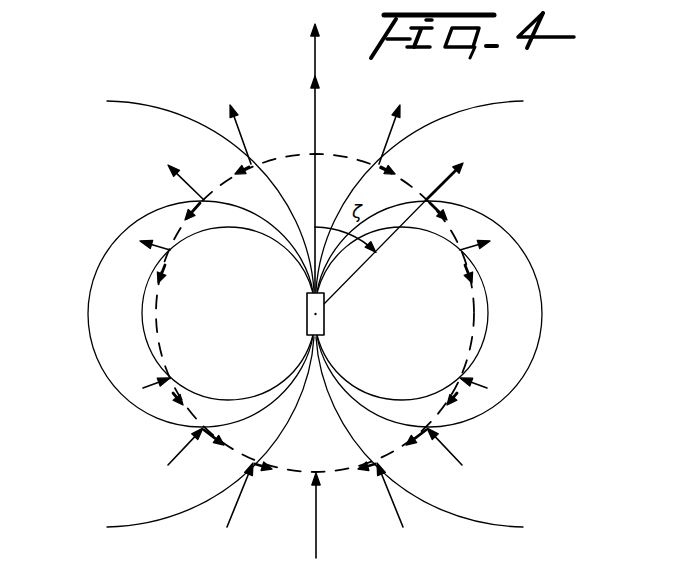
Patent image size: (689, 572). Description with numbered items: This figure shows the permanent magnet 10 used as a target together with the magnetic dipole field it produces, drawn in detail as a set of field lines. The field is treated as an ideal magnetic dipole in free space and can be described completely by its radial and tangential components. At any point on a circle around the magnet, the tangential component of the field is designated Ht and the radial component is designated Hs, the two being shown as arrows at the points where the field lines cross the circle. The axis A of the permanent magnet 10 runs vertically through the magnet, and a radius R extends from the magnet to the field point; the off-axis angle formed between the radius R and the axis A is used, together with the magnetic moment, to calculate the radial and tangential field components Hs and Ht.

The permanent magnet 10 is at (334, 314).
The axis A is at (316, 107).
The radius R is at (376, 251).
The radial component Hs is at (443, 188).
The tangential component Ht is at (452, 200).